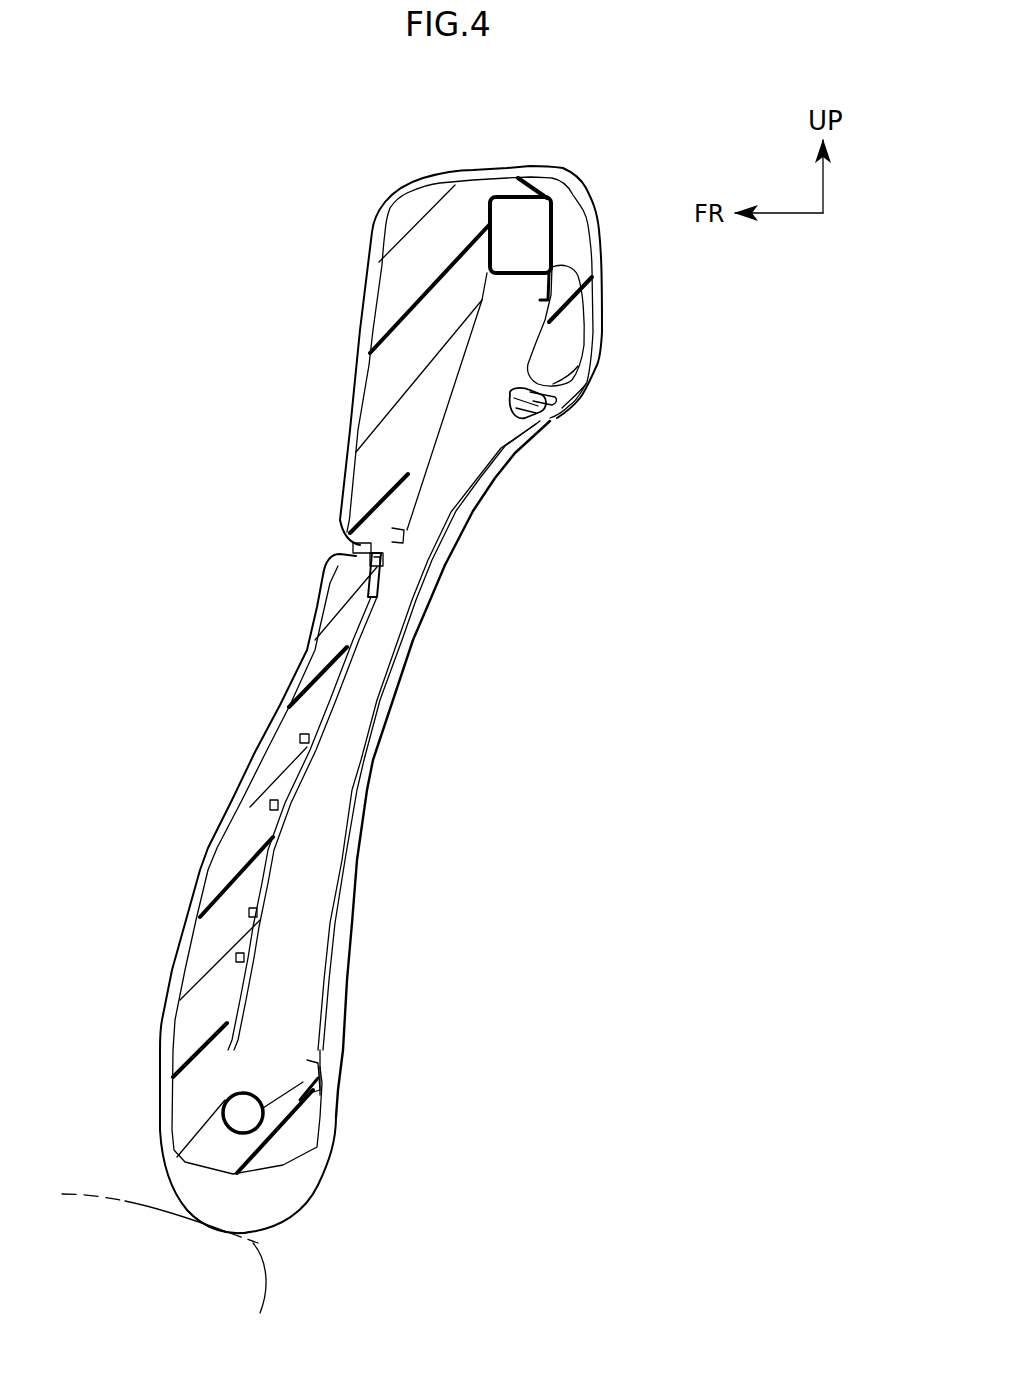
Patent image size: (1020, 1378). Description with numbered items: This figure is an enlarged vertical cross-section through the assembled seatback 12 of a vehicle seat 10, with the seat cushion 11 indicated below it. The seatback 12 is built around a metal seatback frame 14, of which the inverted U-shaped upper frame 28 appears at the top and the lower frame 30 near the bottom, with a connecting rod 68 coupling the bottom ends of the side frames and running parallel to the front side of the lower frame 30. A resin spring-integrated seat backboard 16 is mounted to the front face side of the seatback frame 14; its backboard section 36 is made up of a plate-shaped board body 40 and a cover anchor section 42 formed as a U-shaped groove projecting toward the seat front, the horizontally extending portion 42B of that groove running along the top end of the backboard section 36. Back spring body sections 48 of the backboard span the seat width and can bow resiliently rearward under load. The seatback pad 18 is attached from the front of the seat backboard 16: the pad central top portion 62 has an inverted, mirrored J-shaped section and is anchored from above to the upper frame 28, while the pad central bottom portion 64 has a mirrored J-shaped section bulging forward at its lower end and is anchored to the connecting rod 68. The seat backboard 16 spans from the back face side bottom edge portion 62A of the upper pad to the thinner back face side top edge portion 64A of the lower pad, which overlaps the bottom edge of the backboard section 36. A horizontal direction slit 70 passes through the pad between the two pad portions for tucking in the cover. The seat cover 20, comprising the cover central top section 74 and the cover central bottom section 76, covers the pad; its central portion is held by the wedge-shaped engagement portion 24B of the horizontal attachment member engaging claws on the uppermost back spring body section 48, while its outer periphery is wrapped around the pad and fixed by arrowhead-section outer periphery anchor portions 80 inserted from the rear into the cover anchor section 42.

The vehicle seat 10 is at (190, 618).
The seat cushion 11 is at (82, 1190).
The seatback 12 is at (320, 447).
The seatback frame 14 is at (528, 276).
The seat backboard 16 is at (360, 920).
The seatback pad 18 is at (222, 1186).
The seat cover 20 is at (256, 750).
The engagement portion 24B is at (380, 563).
The upper frame 28 is at (560, 257).
The lower frame 30 is at (307, 1065).
The backboard section 36 is at (404, 673).
The board body 40 is at (460, 516).
The cover anchor section 42 is at (533, 386).
The horizontally extending portion 42B is at (586, 290).
The back spring body sections 48 is at (379, 587).
The pad central top portion 62 is at (357, 388).
The back face side bottom edge portion 62A is at (582, 362).
The pad central bottom portion 64 is at (217, 849).
The back face side top edge portion 64A is at (312, 1090).
The connecting rod 68 is at (247, 1092).
The horizontal direction slit 70 is at (352, 547).
The cover central top section 74 is at (364, 330).
The cover central bottom section 76 is at (278, 705).
The outer periphery anchor portions 80 is at (510, 400).